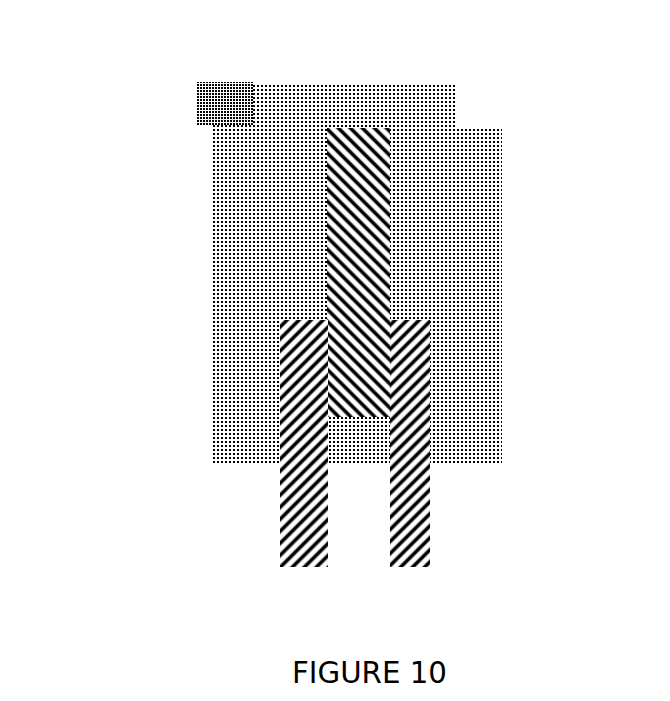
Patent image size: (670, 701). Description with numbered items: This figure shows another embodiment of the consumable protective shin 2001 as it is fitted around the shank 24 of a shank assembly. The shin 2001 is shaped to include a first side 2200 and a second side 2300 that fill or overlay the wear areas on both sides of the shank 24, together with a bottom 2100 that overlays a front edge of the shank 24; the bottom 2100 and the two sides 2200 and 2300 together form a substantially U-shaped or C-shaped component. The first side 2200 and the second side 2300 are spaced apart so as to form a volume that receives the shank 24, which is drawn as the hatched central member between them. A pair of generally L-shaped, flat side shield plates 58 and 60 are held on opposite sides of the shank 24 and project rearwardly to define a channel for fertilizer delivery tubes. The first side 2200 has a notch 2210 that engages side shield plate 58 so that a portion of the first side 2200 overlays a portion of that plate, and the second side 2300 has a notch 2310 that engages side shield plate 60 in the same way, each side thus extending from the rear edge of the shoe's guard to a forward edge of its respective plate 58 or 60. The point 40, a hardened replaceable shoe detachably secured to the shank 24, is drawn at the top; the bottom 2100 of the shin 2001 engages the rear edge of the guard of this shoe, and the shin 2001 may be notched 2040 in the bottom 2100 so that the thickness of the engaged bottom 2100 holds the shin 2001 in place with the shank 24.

The point 40 is at (231, 96).
The bottom 2100 is at (397, 93).
The notch 2040 is at (438, 128).
The consumable protective shin 2001 is at (273, 185).
The first side 2200 is at (242, 211).
The shank 24 is at (390, 223).
The second side 2300 is at (465, 270).
The notch 2210 is at (277, 327).
The notch 2310 is at (430, 322).
The side shield plate 58 is at (297, 492).
The side shield plate 60 is at (418, 495).